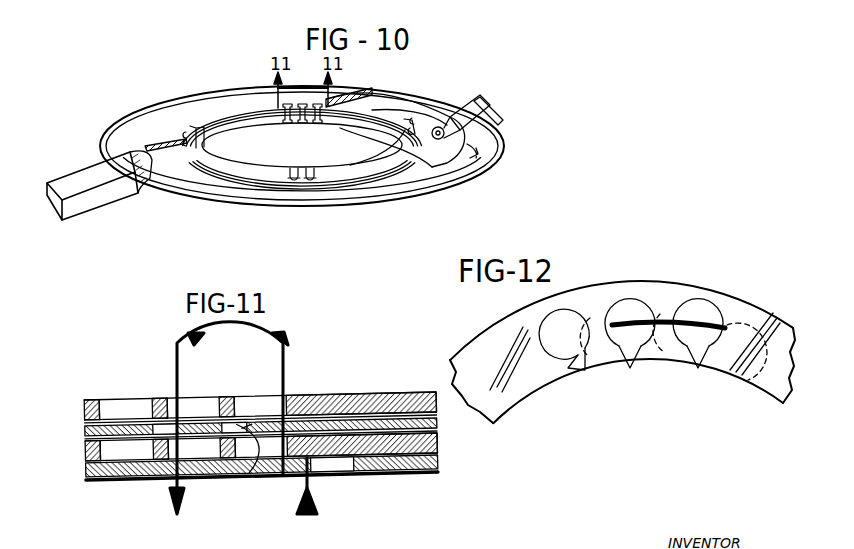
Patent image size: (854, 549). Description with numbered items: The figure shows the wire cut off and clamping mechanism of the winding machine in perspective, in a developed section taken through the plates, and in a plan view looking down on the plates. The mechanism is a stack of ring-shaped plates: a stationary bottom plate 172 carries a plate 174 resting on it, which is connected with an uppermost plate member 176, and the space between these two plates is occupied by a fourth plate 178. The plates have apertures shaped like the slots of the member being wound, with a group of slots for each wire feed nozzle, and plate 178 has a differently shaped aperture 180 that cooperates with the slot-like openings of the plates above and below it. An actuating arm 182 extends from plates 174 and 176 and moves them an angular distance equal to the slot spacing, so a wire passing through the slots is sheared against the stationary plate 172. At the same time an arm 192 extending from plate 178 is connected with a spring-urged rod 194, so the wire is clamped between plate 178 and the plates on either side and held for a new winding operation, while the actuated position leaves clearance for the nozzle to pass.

In FIG. 10, the stationary bottom plate 172 is at (362, 130).
In FIG. 11, the stationary bottom plate 172 is at (437, 478).
In FIG. 10, the plate 174 is at (290, 199).
In FIG. 11, the plate 174 is at (437, 455).
In FIG. 10, the uppermost plate member 176 is at (346, 90).
In FIG. 11, the uppermost plate member 176 is at (388, 396).
In FIG. 12, the uppermost plate member 176 is at (760, 288).
In FIG. 11, the fourth plate 178 is at (437, 428).
In FIG. 12, the fourth plate 178 is at (622, 303).
In FIG. 11, the aperture 180 is at (252, 473).
In FIG. 12, the aperture 180 is at (672, 363).
In FIG. 10, the actuating arm 182 is at (87, 205).
In FIG. 10, the arm 192 is at (480, 107).
In FIG. 10, the rod 194 is at (503, 122).